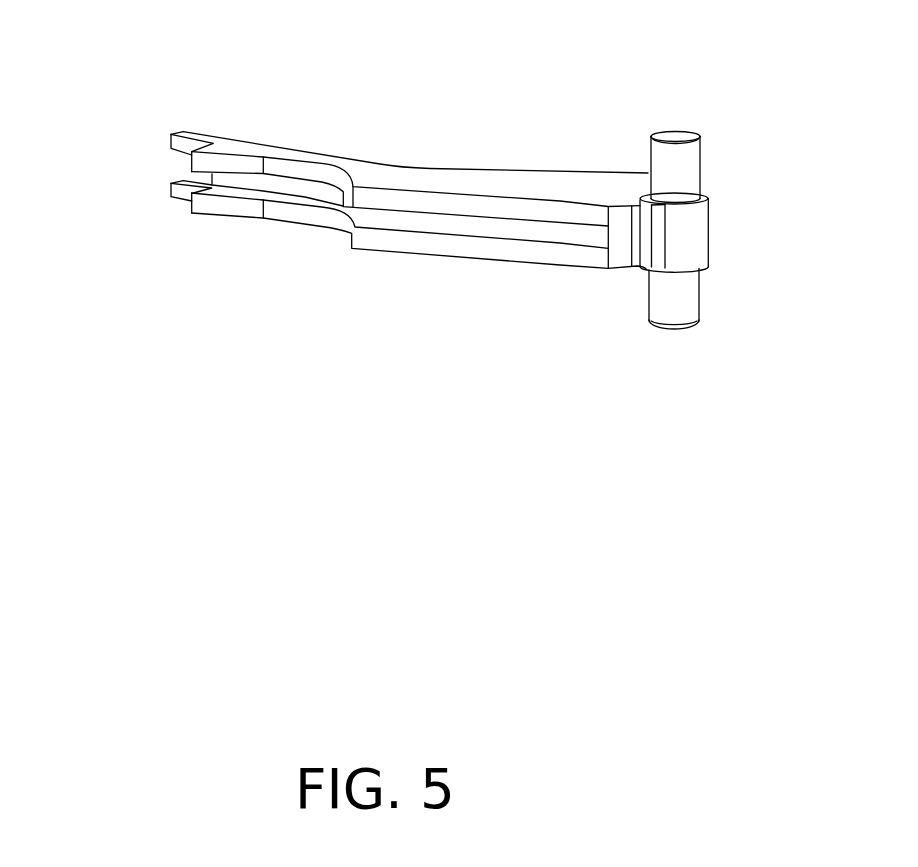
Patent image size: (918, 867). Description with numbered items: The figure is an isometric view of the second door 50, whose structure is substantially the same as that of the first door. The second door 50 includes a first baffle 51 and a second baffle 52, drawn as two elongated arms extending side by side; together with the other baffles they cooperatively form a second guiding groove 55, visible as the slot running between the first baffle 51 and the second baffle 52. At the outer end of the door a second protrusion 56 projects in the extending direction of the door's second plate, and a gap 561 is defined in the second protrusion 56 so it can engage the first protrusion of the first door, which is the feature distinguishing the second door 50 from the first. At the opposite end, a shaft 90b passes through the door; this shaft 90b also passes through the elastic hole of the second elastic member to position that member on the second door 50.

The second door 50 is at (321, 75).
The first baffle 51 is at (452, 181).
The second baffle 52 is at (465, 253).
The second guiding groove 55 is at (392, 222).
The second protrusion 56 is at (177, 193).
The gap 561 is at (172, 167).
The shaft 90b is at (669, 156).